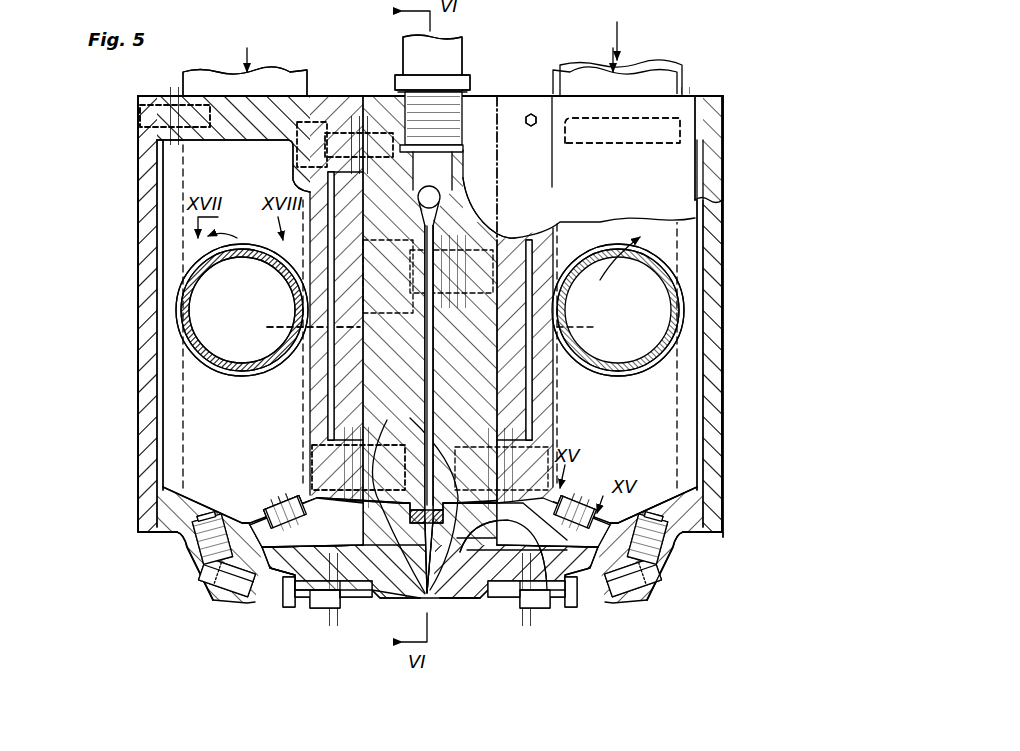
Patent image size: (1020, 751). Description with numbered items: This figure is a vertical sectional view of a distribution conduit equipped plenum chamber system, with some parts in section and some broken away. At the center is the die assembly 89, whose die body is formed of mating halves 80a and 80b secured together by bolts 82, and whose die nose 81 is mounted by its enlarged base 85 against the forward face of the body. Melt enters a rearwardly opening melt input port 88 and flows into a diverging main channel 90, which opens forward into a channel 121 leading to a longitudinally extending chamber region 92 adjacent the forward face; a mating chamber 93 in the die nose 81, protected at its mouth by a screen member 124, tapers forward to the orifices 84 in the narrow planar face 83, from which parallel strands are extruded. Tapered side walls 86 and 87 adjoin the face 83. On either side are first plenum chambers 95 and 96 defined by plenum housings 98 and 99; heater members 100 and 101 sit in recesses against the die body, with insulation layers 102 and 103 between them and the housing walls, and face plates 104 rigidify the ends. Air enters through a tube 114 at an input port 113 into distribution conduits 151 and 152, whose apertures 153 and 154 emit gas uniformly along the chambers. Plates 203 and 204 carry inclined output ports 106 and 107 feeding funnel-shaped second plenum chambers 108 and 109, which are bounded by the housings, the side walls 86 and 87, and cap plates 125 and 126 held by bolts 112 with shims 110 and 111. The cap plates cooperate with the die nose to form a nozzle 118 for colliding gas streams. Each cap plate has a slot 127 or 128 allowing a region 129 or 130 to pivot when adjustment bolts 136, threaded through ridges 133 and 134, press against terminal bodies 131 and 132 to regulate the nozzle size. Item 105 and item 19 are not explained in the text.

The plenum housing 98 is at (170, 95).
The tube 114 is at (302, 86).
The die assembly 89 is at (372, 95).
The plenum housing 99 is at (700, 112).
The melt input port 88 is at (440, 163).
The main channel 90 is at (478, 185).
The face plate 104 is at (542, 148).
The heater member 101 is at (512, 250).
The threaded ports 105 is at (296, 161).
The apertures 153 is at (245, 252).
The insulation layer 102 is at (330, 263).
The bolts 82 is at (308, 316).
The input port 113 is at (197, 327).
The distribution conduit 151 is at (205, 372).
The die body half 80a is at (377, 357).
The heater member 100 is at (340, 412).
The enlarged base 85 is at (408, 409).
The channel 121 is at (428, 362).
The apertures 154 is at (622, 252).
The die body half 80b is at (480, 375).
The distribution conduit 152 is at (633, 380).
The insulation layer 103 is at (530, 412).
The first plenum chamber 96 is at (680, 393).
The first plenum chamber 95 is at (177, 440).
The plate 203 is at (247, 515).
The output ports 106 is at (278, 508).
The output ports 107 is at (583, 505).
The plate 204 is at (610, 520).
The cap plate 126 is at (574, 508).
The chamber region 92 is at (405, 507).
The screen member 124 is at (410, 521).
The chamber 93 is at (447, 521).
The die nose 81 is at (497, 536).
The shim 110 is at (202, 563).
The bolts 112 is at (222, 578).
The shim 111 is at (647, 573).
The cap plate 125 is at (280, 570).
The second plenum chamber 109 is at (582, 595).
The adjustment bolts 136 is at (295, 602).
The ridge 133 is at (300, 612).
The second plenum chamber 108 is at (303, 615).
The region 129 is at (317, 613).
The slot 127 is at (322, 607).
The terminal body 131 is at (347, 603).
The side wall 86 is at (380, 603).
The nozzle 118 is at (390, 603).
The planar face 83 is at (397, 603).
The nozzle orifice 19 is at (440, 578).
The orifices 84 is at (430, 603).
The terminal body 132 is at (490, 607).
The side wall 87 is at (487, 607).
The slot 128 is at (520, 612).
The region 130 is at (547, 607).
The ridge 134 is at (547, 610).